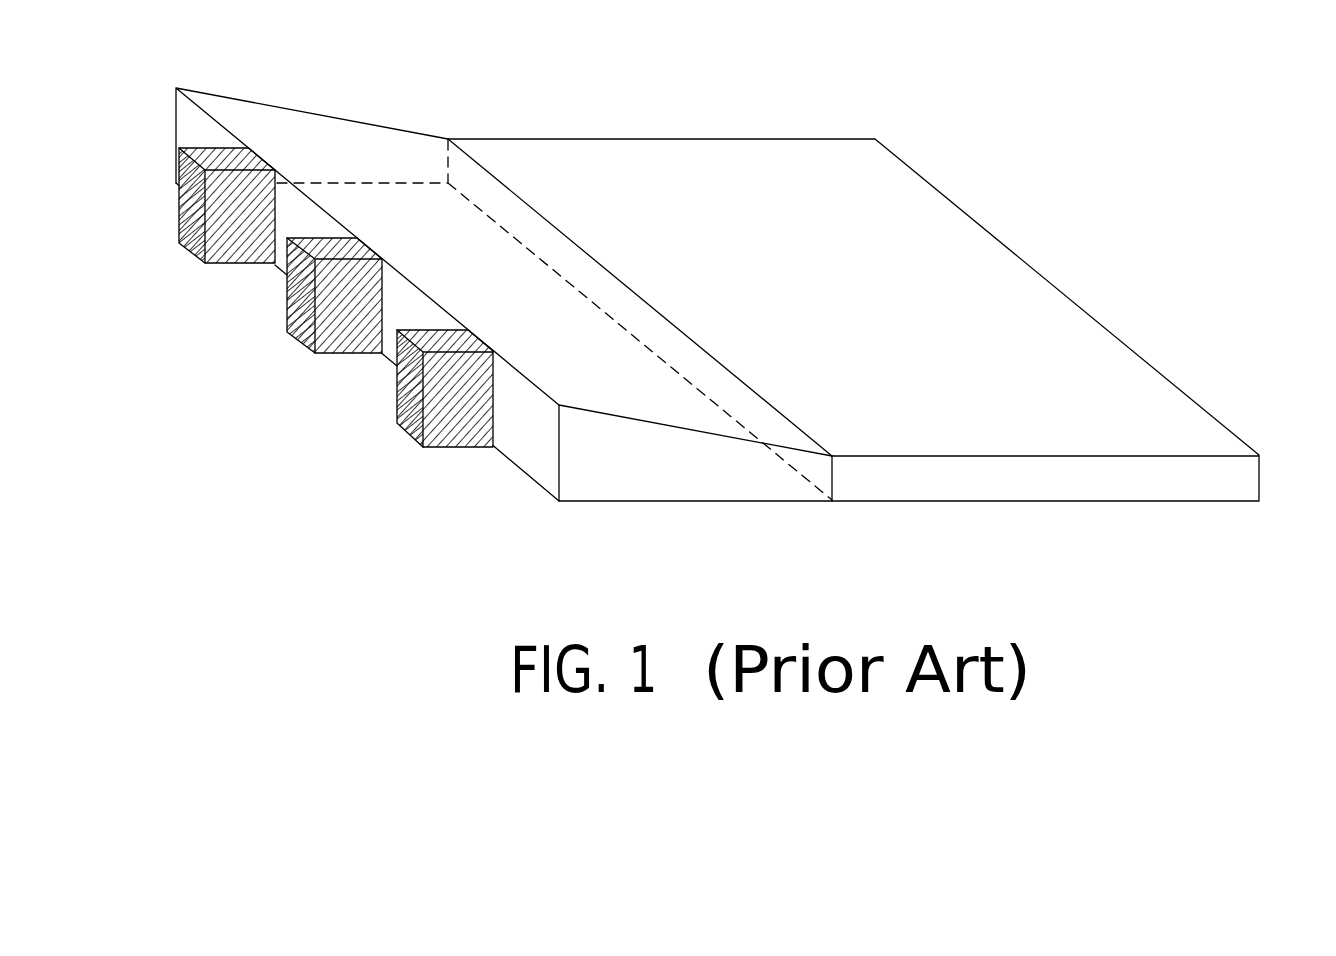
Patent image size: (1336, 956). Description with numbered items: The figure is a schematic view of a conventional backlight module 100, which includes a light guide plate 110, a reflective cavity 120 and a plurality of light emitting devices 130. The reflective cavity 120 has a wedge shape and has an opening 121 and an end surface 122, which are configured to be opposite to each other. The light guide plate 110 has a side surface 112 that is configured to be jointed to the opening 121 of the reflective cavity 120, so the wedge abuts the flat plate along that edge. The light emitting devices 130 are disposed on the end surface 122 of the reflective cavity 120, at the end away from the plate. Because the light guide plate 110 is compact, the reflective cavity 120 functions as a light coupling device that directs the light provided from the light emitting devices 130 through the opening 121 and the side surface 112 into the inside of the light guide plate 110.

The backlight module 100 is at (702, 329).
The light guide plate 110 is at (853, 284).
The side surface 112 is at (498, 164).
The reflective cavity 120 is at (504, 329).
The opening 121 is at (805, 476).
The end surface 122 is at (538, 478).
The light emitting devices 130 is at (185, 212).